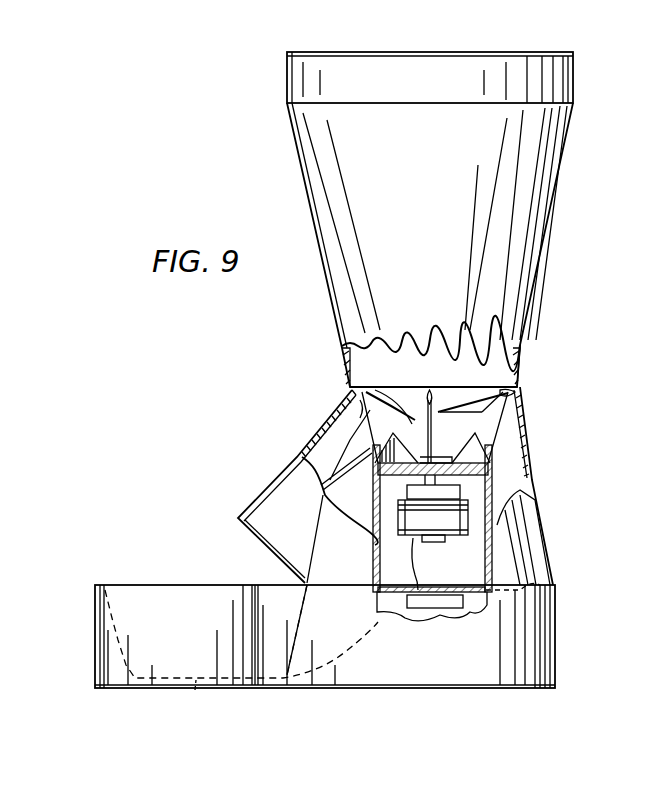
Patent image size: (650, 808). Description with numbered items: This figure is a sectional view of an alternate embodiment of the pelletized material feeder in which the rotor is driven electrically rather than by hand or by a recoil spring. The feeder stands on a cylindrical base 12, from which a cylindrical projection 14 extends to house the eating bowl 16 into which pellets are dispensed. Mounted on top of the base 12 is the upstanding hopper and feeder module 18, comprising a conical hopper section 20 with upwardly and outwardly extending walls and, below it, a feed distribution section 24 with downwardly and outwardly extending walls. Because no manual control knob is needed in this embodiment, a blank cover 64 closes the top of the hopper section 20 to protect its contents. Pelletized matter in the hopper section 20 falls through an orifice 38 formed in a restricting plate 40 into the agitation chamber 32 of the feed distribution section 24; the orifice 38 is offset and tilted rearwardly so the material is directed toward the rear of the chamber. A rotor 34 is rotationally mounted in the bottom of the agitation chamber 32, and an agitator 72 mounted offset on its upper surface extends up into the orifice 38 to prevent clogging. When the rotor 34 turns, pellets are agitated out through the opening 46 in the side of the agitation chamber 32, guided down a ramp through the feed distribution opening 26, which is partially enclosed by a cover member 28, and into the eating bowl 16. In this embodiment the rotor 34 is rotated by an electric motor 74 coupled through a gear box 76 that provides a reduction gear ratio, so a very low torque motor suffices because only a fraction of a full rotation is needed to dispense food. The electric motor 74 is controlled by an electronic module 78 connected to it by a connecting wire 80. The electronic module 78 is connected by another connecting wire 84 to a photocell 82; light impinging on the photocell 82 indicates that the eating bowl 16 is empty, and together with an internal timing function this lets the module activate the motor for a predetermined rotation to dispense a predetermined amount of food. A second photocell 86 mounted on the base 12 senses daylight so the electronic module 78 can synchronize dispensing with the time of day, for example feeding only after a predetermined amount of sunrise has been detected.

The cylindrical base 12 is at (565, 660).
The cylindrical projection 14 is at (100, 653).
The eating bowl 16 is at (112, 622).
The hopper and feeder module 18 is at (526, 398).
The conical hopper section 20 is at (300, 178).
The feed distribution section 24 is at (548, 555).
The feed distribution opening 26 is at (266, 554).
The cover member 28 is at (234, 510).
The agitation chamber 32 is at (518, 416).
The rotor 34 is at (480, 440).
The orifice 38 is at (468, 398).
The restricting plate 40 is at (395, 392).
The opening 46 is at (335, 410).
The blank cover 64 is at (291, 90).
The agitator 72 is at (430, 390).
The electric motor 74 is at (450, 530).
The gear box 76 is at (485, 488).
The electronic module 78 is at (420, 618).
The connecting wire 80 is at (424, 575).
The photocell 82 is at (195, 694).
The connecting wire 84 is at (400, 615).
The second photocell 86 is at (553, 586).